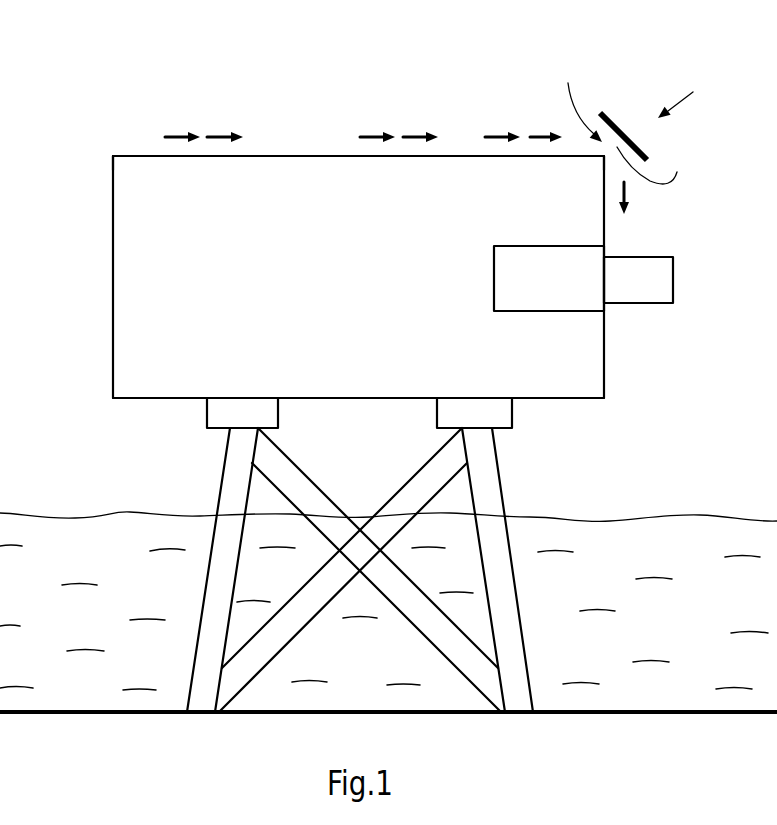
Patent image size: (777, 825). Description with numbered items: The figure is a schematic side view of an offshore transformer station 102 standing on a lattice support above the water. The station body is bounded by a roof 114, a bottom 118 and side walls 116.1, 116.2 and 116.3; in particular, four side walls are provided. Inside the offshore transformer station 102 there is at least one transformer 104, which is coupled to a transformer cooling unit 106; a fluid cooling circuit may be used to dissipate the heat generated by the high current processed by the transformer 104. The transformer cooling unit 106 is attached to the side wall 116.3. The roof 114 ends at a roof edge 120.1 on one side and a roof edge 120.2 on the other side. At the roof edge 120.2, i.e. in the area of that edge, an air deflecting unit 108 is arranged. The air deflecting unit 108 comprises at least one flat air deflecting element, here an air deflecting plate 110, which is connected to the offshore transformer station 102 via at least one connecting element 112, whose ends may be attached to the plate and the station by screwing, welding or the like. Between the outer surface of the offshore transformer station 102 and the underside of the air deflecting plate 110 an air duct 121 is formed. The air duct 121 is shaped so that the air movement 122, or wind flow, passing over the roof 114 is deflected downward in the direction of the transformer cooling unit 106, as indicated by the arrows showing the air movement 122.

The offshore transformer station 102 is at (119, 67).
The transformer 104 is at (567, 290).
The transformer cooling unit 106 is at (657, 290).
The air deflecting unit 108 is at (692, 97).
The air deflecting plate 110 is at (616, 123).
The connecting element 112 is at (656, 165).
The roof 114 is at (303, 155).
The side wall 116.1 is at (113, 288).
The side wall 116.2 is at (180, 340).
The side wall 116.3 is at (605, 363).
The bottom 118 is at (357, 400).
The roof edge 120.1 is at (113, 155).
The roof edge 120.2 is at (603, 156).
The air duct 121 is at (577, 101).
The air movement 122 is at (415, 131).